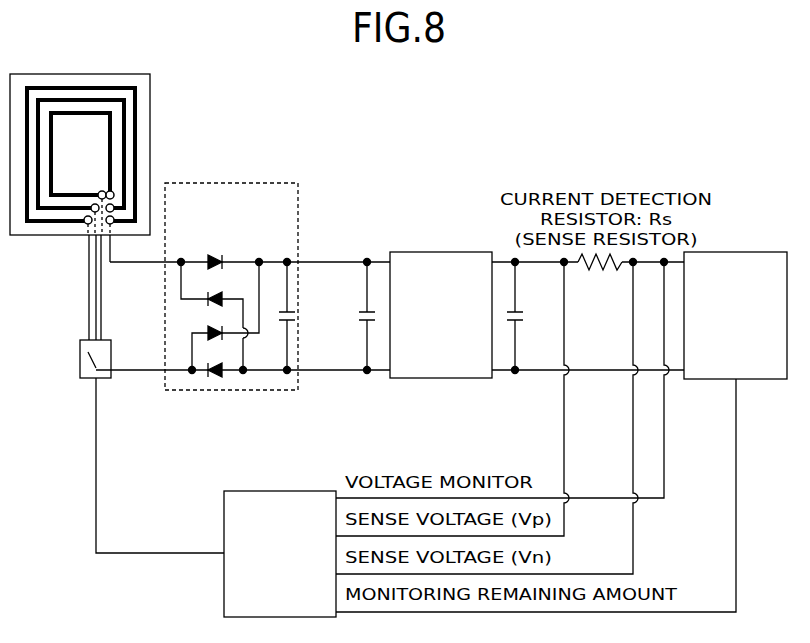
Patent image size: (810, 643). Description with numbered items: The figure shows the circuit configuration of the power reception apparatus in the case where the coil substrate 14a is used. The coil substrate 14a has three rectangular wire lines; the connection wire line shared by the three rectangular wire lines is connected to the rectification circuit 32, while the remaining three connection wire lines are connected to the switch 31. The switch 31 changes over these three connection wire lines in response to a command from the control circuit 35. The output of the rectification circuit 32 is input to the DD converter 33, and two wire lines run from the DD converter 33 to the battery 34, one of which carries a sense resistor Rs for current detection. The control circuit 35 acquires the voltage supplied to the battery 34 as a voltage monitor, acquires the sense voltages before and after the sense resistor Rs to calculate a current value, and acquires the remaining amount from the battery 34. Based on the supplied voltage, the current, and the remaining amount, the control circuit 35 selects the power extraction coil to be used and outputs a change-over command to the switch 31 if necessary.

The coil substrate 14a is at (108, 73).
The switch 31 is at (120, 327).
The rectification circuit 32 is at (275, 183).
The DD converter 33 is at (455, 252).
The battery 34 is at (748, 252).
The control circuit 35 is at (297, 491).